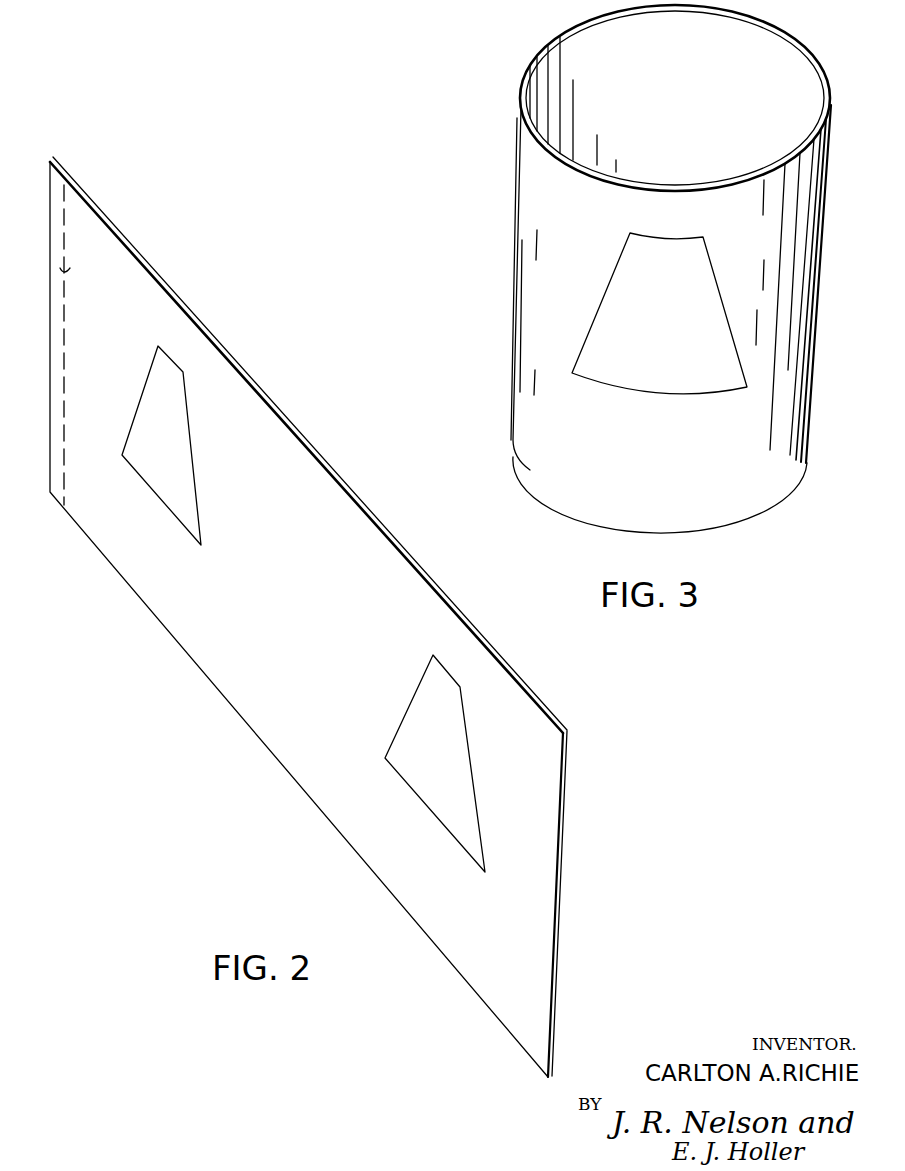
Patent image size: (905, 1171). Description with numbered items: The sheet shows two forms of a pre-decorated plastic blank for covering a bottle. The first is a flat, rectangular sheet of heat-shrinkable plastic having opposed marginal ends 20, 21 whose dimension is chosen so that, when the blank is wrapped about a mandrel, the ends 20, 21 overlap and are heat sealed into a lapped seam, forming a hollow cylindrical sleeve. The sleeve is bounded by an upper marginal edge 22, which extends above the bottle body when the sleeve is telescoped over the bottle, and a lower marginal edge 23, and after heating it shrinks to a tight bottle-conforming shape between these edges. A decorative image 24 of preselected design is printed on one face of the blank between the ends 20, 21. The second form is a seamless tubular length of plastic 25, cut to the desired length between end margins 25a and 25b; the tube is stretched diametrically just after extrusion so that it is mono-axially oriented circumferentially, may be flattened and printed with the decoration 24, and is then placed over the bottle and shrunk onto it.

In FIG. 2, the marginal end 20 is at (50, 208).
In FIG. 2, the marginal end 21 is at (550, 930).
In FIG. 2, the upper marginal edge 22 is at (314, 444).
In FIG. 2, the lower marginal edge 23 is at (248, 728).
In FIG. 2, the decorative image 24 is at (194, 480).
In FIG. 3, the decorative image 24 is at (607, 293).
In FIG. 3, the seamless tubular length of plastic 25 is at (684, 471).
In FIG. 3, the end margin 25a is at (687, 187).
In FIG. 3, the end margin 25b is at (746, 516).